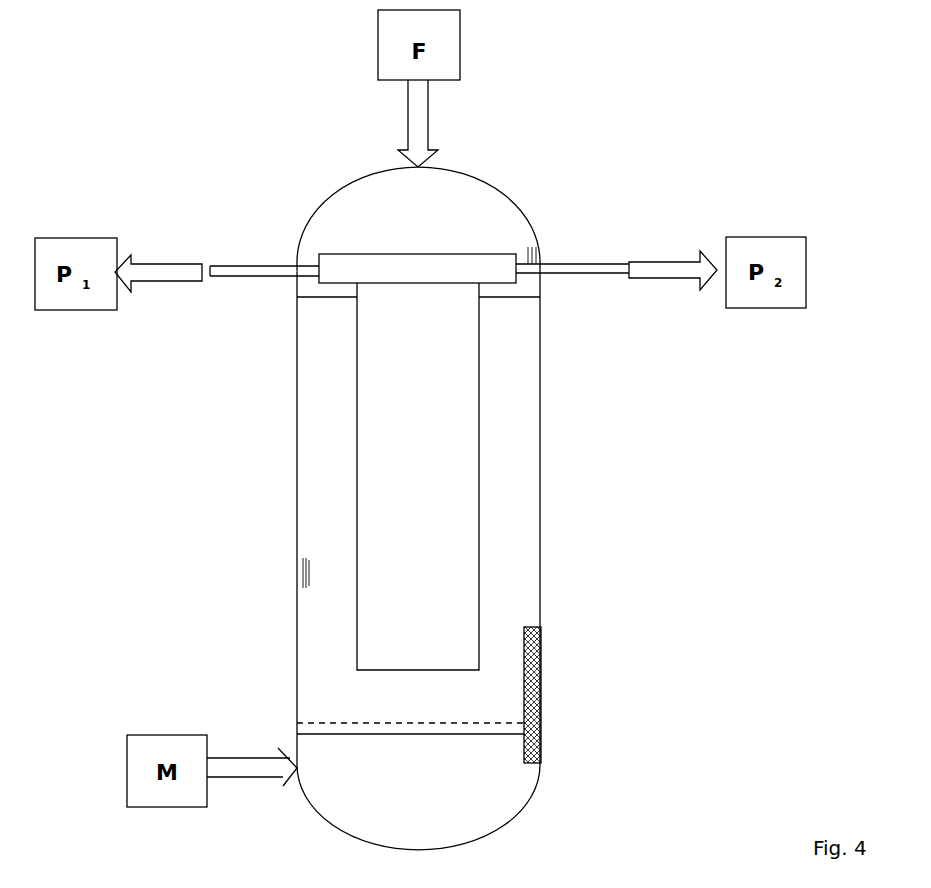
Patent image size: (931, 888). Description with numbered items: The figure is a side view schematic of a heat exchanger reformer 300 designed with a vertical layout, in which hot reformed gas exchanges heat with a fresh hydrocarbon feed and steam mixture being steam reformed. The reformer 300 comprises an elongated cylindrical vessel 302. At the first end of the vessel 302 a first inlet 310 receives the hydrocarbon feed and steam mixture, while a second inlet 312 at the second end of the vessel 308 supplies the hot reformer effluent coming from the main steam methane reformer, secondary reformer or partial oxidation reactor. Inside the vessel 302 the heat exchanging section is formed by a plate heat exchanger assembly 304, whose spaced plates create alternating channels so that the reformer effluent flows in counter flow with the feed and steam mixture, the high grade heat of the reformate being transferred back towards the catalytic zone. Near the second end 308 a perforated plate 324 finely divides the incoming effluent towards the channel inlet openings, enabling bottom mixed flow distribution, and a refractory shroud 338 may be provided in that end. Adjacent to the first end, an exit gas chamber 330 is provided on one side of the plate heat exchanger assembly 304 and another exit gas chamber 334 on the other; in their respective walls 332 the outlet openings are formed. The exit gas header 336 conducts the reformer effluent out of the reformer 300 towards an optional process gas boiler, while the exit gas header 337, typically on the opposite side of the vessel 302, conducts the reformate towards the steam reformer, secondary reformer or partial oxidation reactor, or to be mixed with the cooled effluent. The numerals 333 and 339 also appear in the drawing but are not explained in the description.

The heat exchanger reformer 300 is at (606, 117).
The vessel 302 is at (540, 388).
The plate heat exchanger assembly 304 is at (415, 466).
The second end of the vessel 308 is at (294, 234).
The first inlet 310 is at (420, 166).
The second inlet 312 is at (292, 773).
The perforated plate 324 is at (427, 723).
The exit gas chamber 330 is at (320, 278).
The wall of the exit gas chamber 332 is at (437, 283).
The inner tube bottom 333 is at (423, 672).
The exit gas chamber 334 is at (513, 275).
The exit gas header 336 is at (257, 265).
The exit gas header 337 is at (677, 262).
The refractory shroud 338 is at (541, 683).
The sensor marks 339 is at (297, 578).